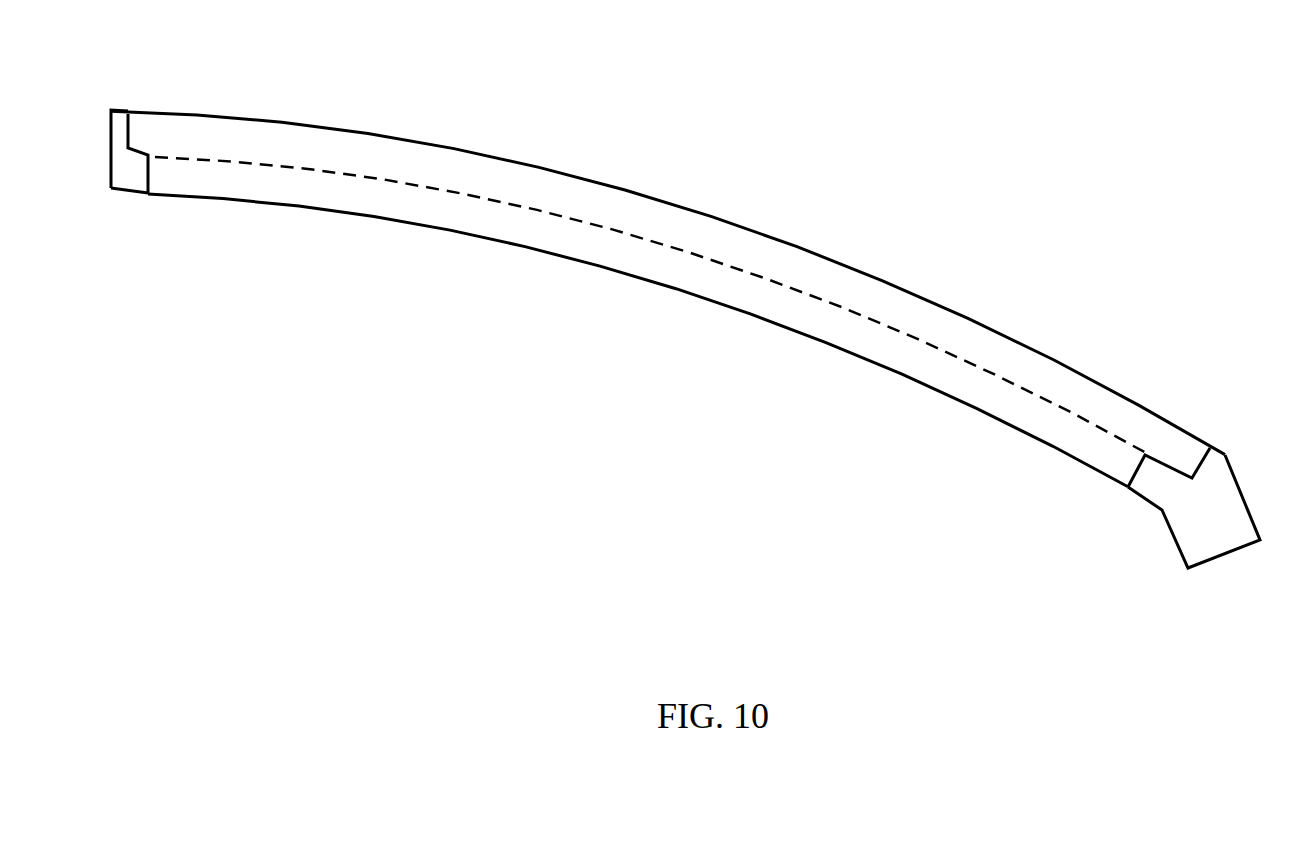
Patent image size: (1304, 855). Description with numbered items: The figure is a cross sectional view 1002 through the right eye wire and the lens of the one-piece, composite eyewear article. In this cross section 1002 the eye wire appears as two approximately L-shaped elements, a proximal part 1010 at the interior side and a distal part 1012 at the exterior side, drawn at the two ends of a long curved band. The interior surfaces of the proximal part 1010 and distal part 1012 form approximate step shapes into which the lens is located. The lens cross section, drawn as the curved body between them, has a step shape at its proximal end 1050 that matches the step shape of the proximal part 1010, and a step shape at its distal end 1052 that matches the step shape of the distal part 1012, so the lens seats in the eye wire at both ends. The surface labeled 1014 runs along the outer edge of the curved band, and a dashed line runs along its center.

The cross sectional view 1002 is at (492, 74).
The proximal part of eye wire 1010 is at (123, 110).
The distal part of eye wire 1012 is at (1225, 455).
The outer surface 1014 is at (735, 227).
The proximal end of lens 1050 is at (138, 138).
The distal end of lens 1052 is at (1183, 455).